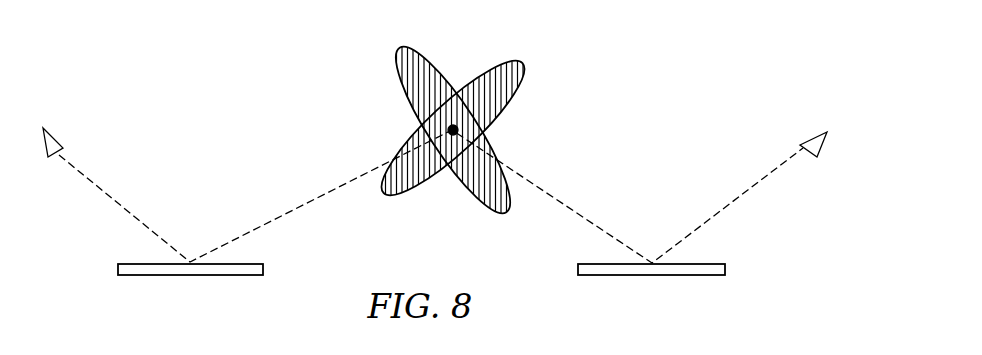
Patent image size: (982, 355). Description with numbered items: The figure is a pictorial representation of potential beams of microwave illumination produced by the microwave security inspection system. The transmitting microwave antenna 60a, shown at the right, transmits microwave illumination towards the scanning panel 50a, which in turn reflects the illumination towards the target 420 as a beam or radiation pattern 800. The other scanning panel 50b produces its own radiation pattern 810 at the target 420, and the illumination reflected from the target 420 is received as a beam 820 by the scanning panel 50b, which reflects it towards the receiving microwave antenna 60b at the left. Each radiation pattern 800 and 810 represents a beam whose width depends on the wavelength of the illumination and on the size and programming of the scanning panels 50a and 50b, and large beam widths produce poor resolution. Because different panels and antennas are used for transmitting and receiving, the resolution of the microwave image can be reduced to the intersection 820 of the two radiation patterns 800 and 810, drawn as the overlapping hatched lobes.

The radiation pattern 800 is at (498, 209).
The radiation pattern 810 is at (410, 194).
The intersection of the two radiation patterns 820 is at (423, 127).
The target 420 is at (458, 130).
The transmitting microwave antenna 60a is at (812, 137).
The receiving microwave antenna 60b is at (55, 131).
The scanning panel 50a is at (725, 268).
The scanning panel 50b is at (118, 268).